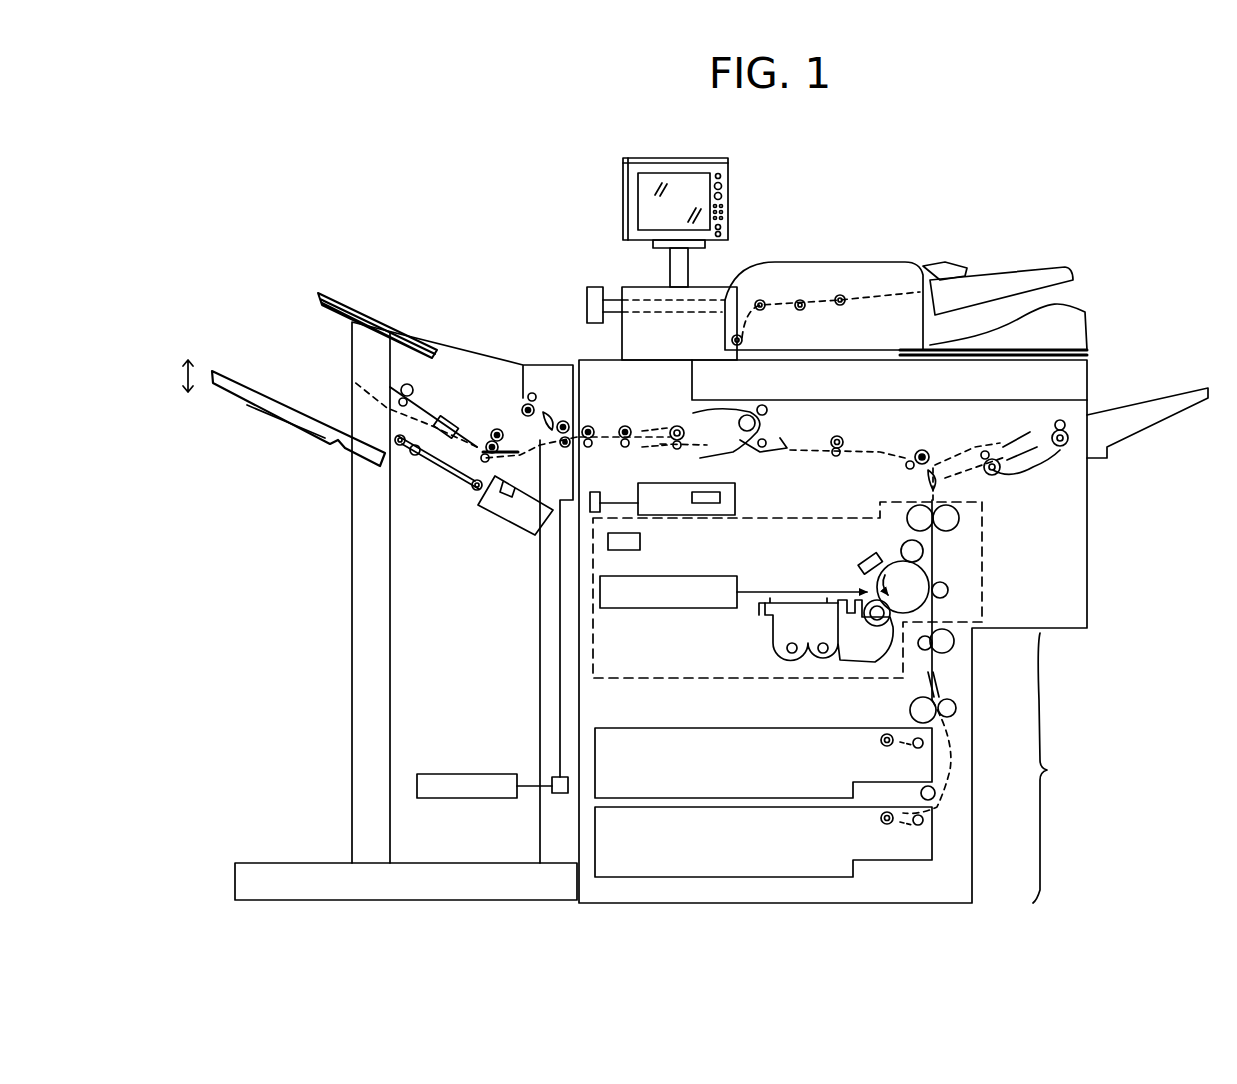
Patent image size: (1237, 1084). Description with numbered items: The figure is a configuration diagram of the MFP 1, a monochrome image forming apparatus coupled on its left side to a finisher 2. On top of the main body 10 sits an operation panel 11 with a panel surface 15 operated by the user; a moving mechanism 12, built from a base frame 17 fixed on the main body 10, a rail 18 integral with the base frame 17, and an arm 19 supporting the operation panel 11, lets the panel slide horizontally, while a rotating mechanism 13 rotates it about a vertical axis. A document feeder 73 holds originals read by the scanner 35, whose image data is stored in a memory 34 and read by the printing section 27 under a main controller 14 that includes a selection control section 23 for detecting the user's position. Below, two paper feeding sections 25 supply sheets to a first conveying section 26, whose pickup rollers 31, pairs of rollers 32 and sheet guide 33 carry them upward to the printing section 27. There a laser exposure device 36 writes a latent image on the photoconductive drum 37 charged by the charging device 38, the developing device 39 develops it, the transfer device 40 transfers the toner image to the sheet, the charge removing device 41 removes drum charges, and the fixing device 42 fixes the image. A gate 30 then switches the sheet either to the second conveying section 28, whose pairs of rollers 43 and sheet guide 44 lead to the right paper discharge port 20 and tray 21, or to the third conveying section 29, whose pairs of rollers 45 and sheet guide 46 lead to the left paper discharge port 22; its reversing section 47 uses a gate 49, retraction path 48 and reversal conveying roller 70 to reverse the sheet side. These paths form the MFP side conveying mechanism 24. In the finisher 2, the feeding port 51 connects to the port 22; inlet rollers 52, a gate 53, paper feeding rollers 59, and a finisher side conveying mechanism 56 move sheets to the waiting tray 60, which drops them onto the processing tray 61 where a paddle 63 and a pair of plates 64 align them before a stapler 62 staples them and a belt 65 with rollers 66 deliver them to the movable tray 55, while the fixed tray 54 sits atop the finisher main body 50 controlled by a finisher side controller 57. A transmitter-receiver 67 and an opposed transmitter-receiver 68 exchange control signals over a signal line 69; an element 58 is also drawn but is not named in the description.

The MFP 1 is at (1018, 192).
The finisher 2 is at (348, 250).
The main body 10 is at (1089, 592).
The operation panel 11 is at (732, 180).
The moving mechanism 12 is at (482, 127).
The rotating mechanism 13 is at (695, 247).
The main controller 14 is at (703, 483).
The panel surface 15 is at (655, 210).
The base frame 17 is at (632, 293).
The rail 18 is at (590, 303).
The arm 19 is at (675, 263).
The paper discharge port 20 is at (1093, 408).
The tray 21 is at (1205, 390).
The paper discharge port 22 is at (661, 323).
The selection control section 23 is at (720, 498).
The MFP side conveying mechanism 24 is at (953, 412).
The paper feeding sections 25 is at (745, 745).
The first conveying section 26 is at (1074, 771).
The printing section 27 is at (983, 530).
The second conveying section 28 is at (1008, 435).
The third conveying section 29 is at (985, 395).
The gate 30 is at (928, 478).
The rollers 31 is at (880, 740).
The pairs of rollers 32 is at (955, 642).
The sheet guide 33 is at (945, 676).
The memory 34 is at (640, 542).
The scanner 35 is at (1089, 360).
The laser exposure device 36 is at (715, 577).
The photoconductive drum 37 is at (950, 600).
The charging device 38 is at (907, 525).
The developing device 39 is at (765, 624).
The transfer device 40 is at (948, 592).
The charge removing device 41 is at (924, 553).
The fixing device 42 is at (860, 568).
The pairs of rollers 43 is at (1035, 465).
The sheet guide 44 is at (1020, 435).
The pairs of rollers 45 is at (670, 428).
The sheet guide 46 is at (667, 447).
The reversing section 47 is at (785, 408).
The retraction path 48 is at (700, 405).
The gate 49 is at (770, 450).
The main body 50 is at (352, 712).
The feeding port 51 is at (563, 410).
The pair of inlet rollers 52 is at (560, 420).
The gate 53 is at (515, 430).
The tray 54 is at (427, 337).
The tray 55 is at (260, 378).
The finisher side conveying mechanism 56 is at (547, 445).
The finisher side controller 57 is at (438, 782).
The switching guide 58 is at (533, 393).
The paper feeding rollers 59 is at (495, 445).
The waiting tray 60 is at (400, 385).
The processing tray 61 is at (410, 427).
The stapler 62 is at (510, 520).
The paddle 63 is at (455, 478).
The pair of plates 64 is at (490, 430).
The belt 65 is at (472, 490).
The rollers 66 is at (400, 445).
The transmitter-receiver 67 is at (556, 793).
The transmitter-receiver 68 is at (590, 505).
The signal line 69 is at (560, 620).
The reversal conveying roller 70 is at (762, 408).
The document feeder 73 is at (900, 268).